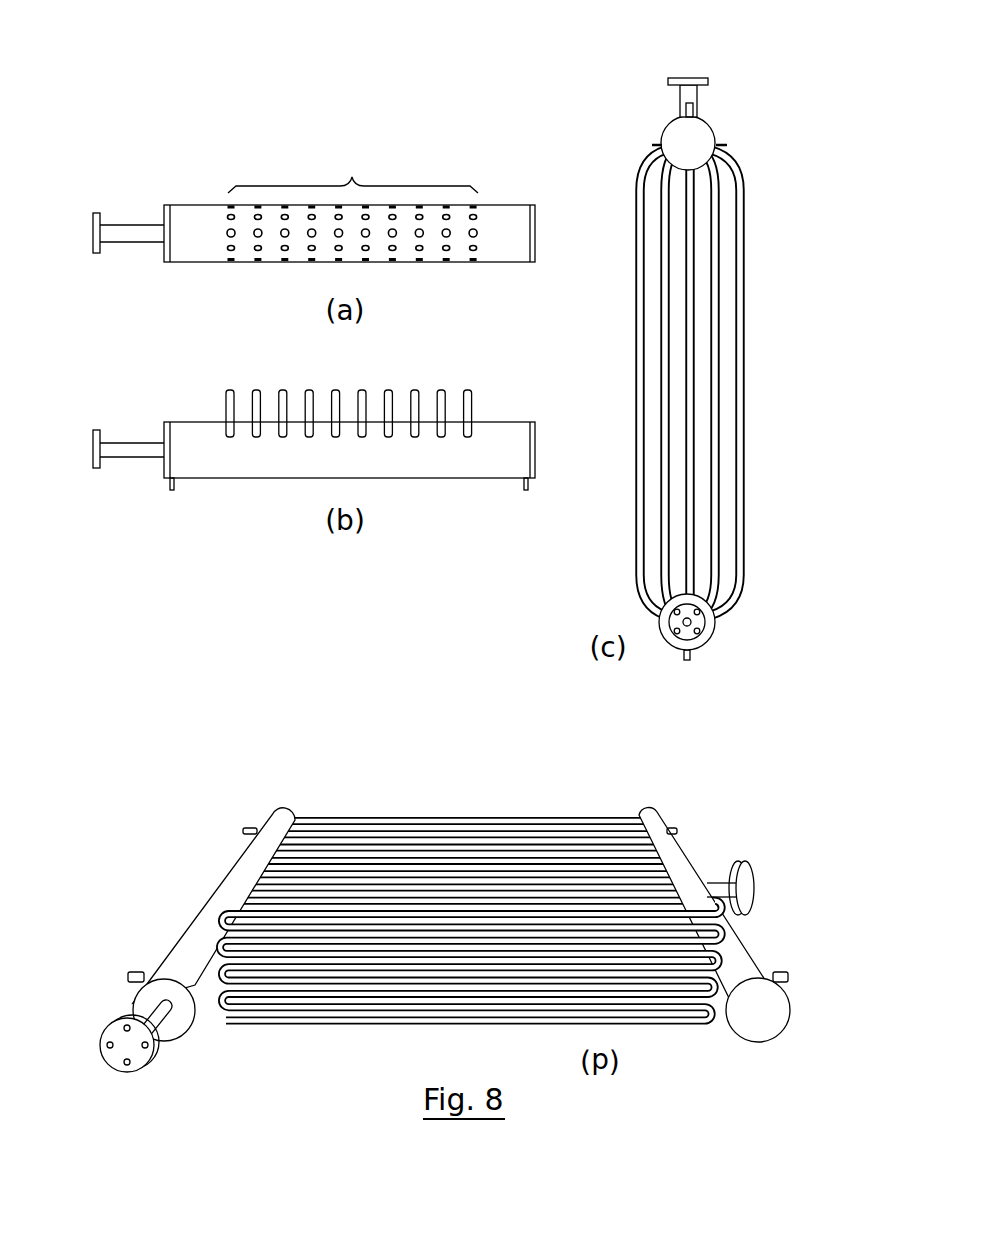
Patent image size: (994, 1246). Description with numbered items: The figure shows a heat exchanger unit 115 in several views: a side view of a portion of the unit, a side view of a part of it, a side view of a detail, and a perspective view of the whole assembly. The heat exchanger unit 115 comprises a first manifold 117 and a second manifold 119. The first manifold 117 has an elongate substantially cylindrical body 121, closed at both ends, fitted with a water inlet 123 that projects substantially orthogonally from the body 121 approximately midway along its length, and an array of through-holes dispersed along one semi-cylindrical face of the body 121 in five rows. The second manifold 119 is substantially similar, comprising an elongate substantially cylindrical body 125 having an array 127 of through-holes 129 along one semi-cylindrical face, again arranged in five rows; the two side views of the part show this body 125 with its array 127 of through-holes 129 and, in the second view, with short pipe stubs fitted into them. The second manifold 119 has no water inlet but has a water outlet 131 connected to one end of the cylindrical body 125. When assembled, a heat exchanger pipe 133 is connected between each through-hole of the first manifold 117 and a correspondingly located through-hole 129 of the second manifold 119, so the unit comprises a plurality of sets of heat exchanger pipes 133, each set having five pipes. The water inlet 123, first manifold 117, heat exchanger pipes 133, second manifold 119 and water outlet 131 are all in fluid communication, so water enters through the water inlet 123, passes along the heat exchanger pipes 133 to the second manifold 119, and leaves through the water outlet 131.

The heat exchanger unit 115 is at (763, 130).
The first manifold 117 is at (700, 130).
The second manifold 119 is at (175, 958).
The elongate substantially cylindrical body 121 is at (765, 1020).
The water inlet 123 is at (668, 87).
The elongate substantially cylindrical body 125 is at (510, 215).
The array of through-holes 127 is at (352, 175).
The through-holes 129 is at (229, 234).
The water outlet 131 is at (96, 210).
The heat exchanger pipe 133 is at (227, 405).